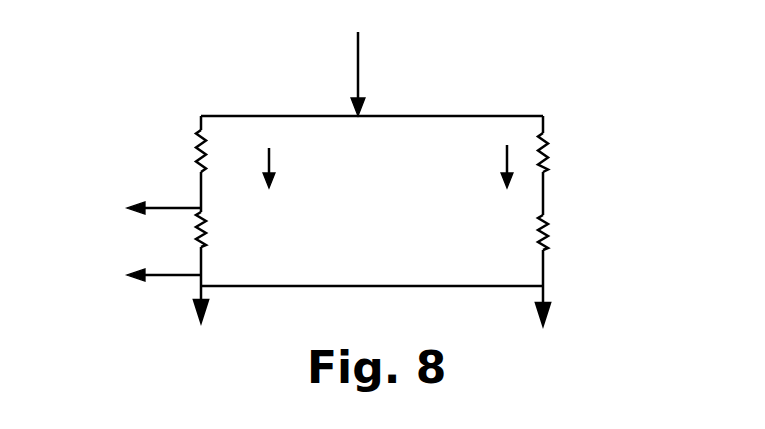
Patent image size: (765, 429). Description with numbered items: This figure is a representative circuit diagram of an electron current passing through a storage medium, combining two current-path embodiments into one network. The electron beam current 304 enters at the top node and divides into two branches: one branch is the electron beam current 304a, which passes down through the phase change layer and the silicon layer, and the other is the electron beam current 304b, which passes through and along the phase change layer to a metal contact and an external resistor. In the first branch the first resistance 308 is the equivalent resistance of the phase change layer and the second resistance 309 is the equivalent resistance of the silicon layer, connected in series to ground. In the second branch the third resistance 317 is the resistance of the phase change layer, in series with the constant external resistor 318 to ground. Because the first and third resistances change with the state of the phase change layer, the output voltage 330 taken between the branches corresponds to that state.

The electron beam current 304 is at (358, 62).
The electron beam current 304a is at (507, 157).
The electron beam current 304b is at (269, 155).
The resistance R1 308 is at (545, 136).
The resistance R2 309 is at (545, 218).
The resistance R3 317 is at (199, 142).
The resistor R4 318 is at (201, 246).
The output voltage Vout 330 is at (77, 277).